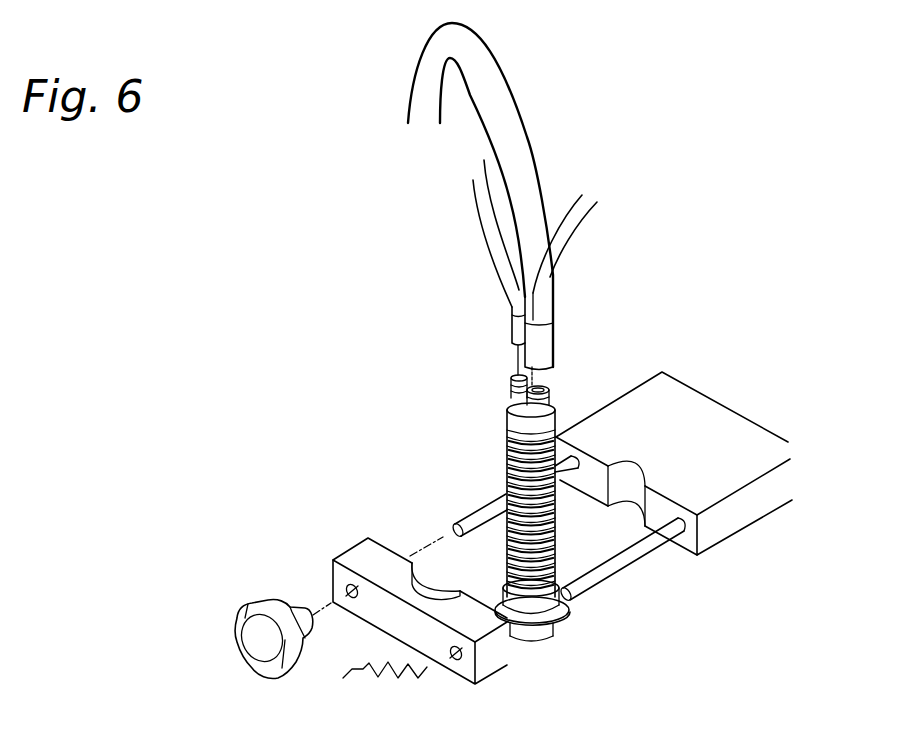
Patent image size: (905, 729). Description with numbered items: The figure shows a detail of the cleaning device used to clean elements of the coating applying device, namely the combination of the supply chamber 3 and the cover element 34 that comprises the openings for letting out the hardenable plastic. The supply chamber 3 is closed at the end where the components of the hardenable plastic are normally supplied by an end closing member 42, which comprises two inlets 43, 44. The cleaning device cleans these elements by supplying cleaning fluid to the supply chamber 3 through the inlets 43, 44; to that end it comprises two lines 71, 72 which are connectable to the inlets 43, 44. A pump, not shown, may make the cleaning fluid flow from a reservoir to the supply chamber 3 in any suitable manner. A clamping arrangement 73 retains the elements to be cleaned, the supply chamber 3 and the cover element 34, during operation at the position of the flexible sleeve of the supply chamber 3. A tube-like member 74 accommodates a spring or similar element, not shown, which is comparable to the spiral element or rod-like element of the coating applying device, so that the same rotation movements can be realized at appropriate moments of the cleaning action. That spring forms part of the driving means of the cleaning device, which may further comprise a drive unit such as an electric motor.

The supply chamber 3 is at (550, 534).
The cover element 34 is at (555, 626).
The end closing member 42 is at (506, 427).
The inlet 43 is at (511, 390).
The inlet 44 is at (549, 395).
The line 71 is at (478, 203).
The line 72 is at (583, 204).
The clamping arrangement 73 is at (673, 574).
The tube-like member 74 is at (518, 135).